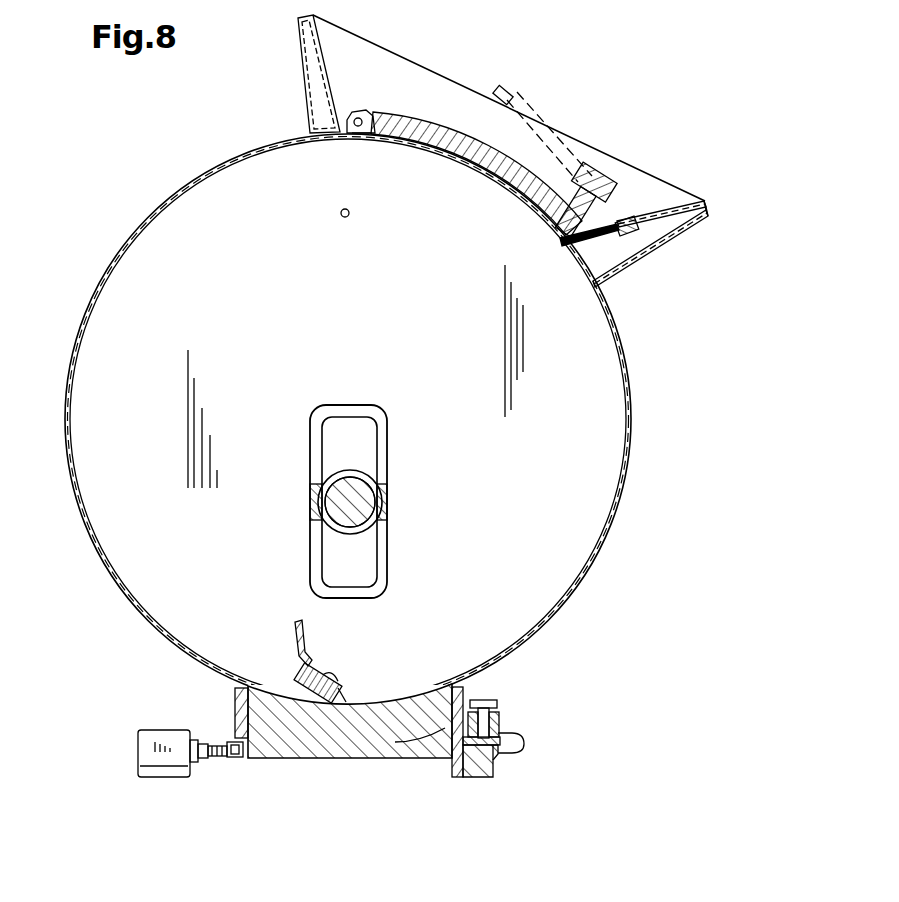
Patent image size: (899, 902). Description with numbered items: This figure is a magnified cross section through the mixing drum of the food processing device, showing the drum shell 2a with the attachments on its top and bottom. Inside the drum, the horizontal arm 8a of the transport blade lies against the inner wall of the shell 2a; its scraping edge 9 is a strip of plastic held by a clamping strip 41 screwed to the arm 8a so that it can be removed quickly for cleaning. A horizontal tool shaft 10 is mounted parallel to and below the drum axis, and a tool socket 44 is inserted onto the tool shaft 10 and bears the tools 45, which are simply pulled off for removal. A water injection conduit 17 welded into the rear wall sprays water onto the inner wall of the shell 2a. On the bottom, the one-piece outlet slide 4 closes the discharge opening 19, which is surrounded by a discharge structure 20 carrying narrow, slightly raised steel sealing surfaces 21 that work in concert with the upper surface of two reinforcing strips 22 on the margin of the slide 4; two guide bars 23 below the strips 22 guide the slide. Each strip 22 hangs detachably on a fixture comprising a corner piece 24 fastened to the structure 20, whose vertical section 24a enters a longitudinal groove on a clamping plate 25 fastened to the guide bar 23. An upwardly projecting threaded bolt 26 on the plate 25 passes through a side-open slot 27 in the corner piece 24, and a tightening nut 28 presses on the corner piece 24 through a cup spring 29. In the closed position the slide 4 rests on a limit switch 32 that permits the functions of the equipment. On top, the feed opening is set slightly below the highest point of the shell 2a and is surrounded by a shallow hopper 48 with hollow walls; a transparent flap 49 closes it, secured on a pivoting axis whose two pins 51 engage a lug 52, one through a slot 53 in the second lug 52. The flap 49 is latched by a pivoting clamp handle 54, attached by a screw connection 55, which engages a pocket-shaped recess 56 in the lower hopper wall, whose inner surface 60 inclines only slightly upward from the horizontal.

The shell 2a is at (180, 190).
The outlet slide 4 is at (326, 745).
The horizontal arm 8a is at (295, 628).
The scraping edge 9 is at (344, 702).
The tool shaft 10 is at (362, 512).
The water injection conduit 17 is at (350, 215).
The discharge opening 19 is at (399, 694).
The discharge structure 20 is at (235, 714).
The sealing surfaces 21 is at (238, 760).
The reinforcing strips 22 is at (456, 758).
The guide bars 23 is at (476, 768).
The corner piece 24 is at (445, 745).
The vertical section 24a is at (522, 752).
The clamping plate 25 is at (490, 756).
The threaded bolt 26 is at (502, 740).
The slot 27 is at (540, 742).
The tightening nut 28 is at (492, 706).
The cup spring 29 is at (502, 720).
The limit switch 32 is at (152, 757).
The clamping strip 41 is at (300, 680).
The tool socket 44 is at (362, 480).
The tools 45 is at (375, 420).
The hopper 48 is at (312, 58).
The flap 49 is at (488, 166).
The pins 51 is at (358, 135).
The lug 52 is at (347, 120).
The slot 53 is at (356, 104).
The clamp handle 54 is at (510, 96).
The screw connection 55 is at (600, 172).
The pocket-shaped recess 56 is at (628, 242).
The inner surface 60 is at (667, 198).